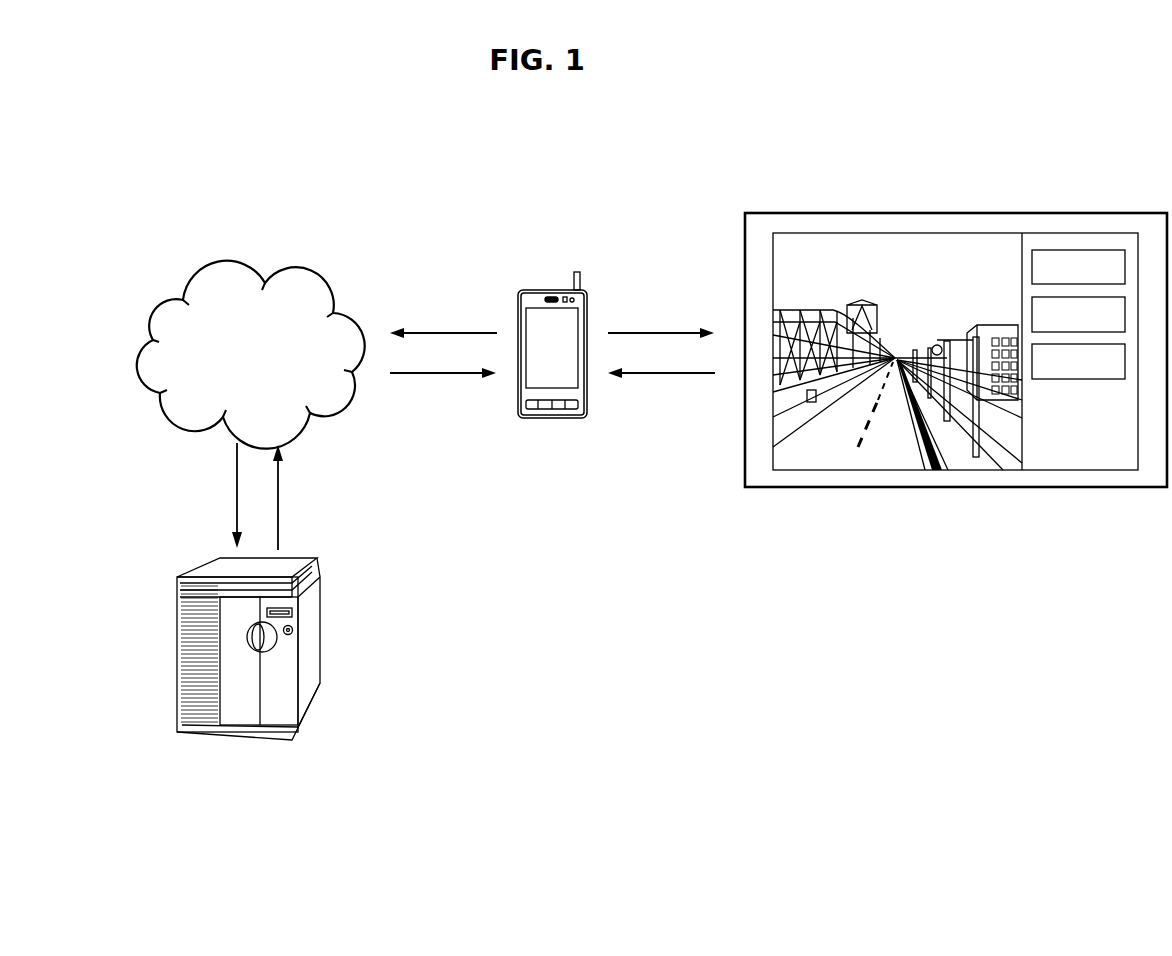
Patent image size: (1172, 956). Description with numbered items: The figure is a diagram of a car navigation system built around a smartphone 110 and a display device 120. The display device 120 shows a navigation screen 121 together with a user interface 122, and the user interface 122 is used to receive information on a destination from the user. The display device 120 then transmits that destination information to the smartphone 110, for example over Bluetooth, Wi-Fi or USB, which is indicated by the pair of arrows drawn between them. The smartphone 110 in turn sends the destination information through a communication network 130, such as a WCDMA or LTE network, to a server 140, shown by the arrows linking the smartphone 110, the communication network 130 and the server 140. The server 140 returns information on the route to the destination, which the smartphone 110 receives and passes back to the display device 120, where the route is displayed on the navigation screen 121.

The smartphone 110 is at (551, 290).
The display device 120 is at (956, 347).
The navigation screen 121 is at (888, 448).
The user interface 122 is at (1082, 447).
The communication network 130 is at (232, 268).
The server 140 is at (320, 627).